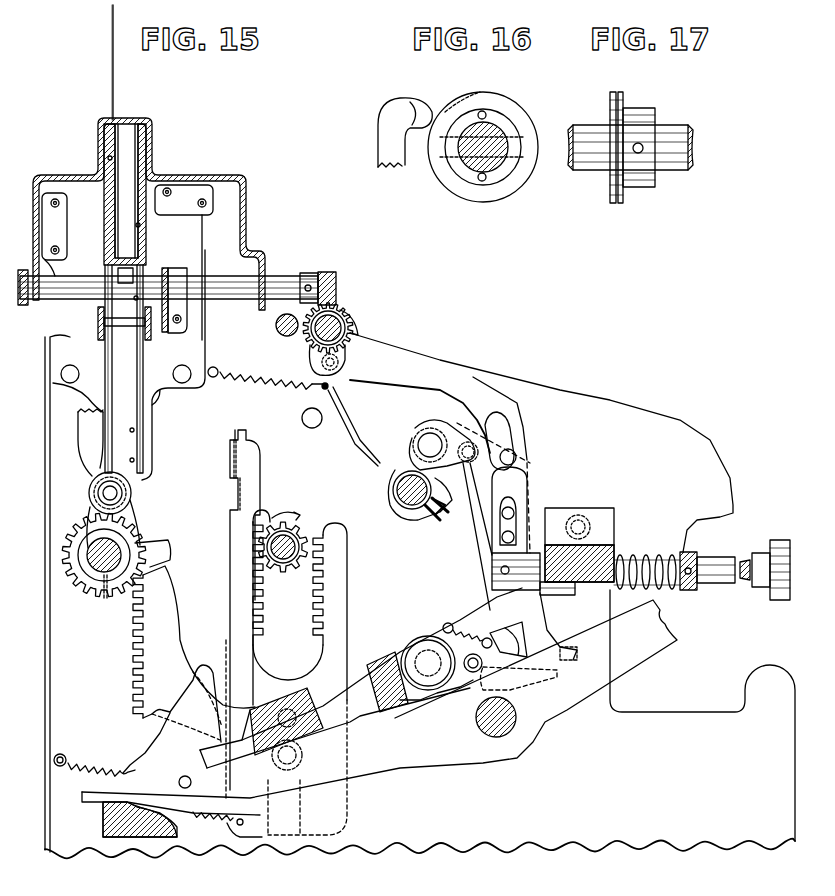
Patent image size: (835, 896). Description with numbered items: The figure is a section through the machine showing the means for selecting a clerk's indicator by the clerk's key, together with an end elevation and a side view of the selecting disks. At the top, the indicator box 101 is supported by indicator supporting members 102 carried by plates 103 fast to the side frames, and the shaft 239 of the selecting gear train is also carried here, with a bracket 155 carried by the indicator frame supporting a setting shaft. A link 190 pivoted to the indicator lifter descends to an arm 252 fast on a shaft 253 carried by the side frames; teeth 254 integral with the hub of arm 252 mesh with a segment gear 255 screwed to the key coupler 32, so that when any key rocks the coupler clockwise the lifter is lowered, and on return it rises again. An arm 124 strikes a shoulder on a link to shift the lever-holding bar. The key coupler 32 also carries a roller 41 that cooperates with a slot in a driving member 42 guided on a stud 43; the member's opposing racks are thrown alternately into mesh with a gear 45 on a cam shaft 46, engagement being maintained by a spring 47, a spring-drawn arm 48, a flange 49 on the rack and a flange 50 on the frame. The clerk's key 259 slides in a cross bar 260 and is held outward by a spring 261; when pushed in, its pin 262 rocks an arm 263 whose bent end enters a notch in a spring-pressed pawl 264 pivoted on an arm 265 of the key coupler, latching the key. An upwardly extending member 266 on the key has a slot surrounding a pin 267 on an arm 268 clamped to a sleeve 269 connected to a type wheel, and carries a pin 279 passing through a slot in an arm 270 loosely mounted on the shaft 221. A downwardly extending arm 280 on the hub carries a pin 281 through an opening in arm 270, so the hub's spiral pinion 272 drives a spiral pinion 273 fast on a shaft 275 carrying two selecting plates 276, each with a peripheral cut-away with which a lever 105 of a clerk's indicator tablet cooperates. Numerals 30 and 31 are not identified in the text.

In FIG. 15, the main lever arm 30 is at (570, 698).
In FIG. 15, the pivot stud 31 is at (492, 736).
In FIG. 15, the key coupler 32 is at (402, 655).
In FIG. 15, the roller 41 is at (282, 695).
In FIG. 15, the driving member 42 is at (348, 610).
In FIG. 15, the stud 43 is at (300, 762).
In FIG. 15, the gear 45 is at (302, 525).
In FIG. 15, the cam shaft 46 is at (284, 565).
In FIG. 15, the spring 47 is at (96, 768).
In FIG. 15, the spring-drawn arm 48 is at (352, 428).
In FIG. 15, the flange 49 is at (238, 500).
In FIG. 15, the flange 50 is at (238, 432).
In FIG. 15, the indicator box 101 is at (146, 228).
In FIG. 15, the indicator supporting members 102 is at (232, 178).
In FIG. 15, the plates 103 is at (195, 245).
In FIG. 16, the lever 105 is at (400, 112).
In FIG. 15, the arm 124 is at (166, 548).
In FIG. 15, the bracket 155 is at (165, 333).
In FIG. 15, the link 190 is at (88, 455).
In FIG. 15, the shaft 221 is at (356, 325).
In FIG. 15, the shaft 239 is at (283, 335).
In FIG. 15, the arm 252 is at (128, 514).
In FIG. 15, the shaft 253 is at (86, 590).
In FIG. 15, the teeth 254 is at (104, 612).
In FIG. 15, the segment gear 255 is at (176, 622).
In FIG. 15, the clerk's key 259 is at (720, 583).
In FIG. 15, the cross bar 260 is at (603, 548).
In FIG. 15, the spring 261 is at (630, 555).
In FIG. 15, the pin 262 is at (492, 580).
In FIG. 15, the arm 263 is at (483, 545).
In FIG. 15, the spring-pressed pawl 264 is at (518, 685).
In FIG. 15, the arm 265 is at (548, 630).
In FIG. 15, the upwardly extending member 266 is at (528, 478).
In FIG. 15, the pin 267 is at (425, 440).
In FIG. 15, the arm 268 is at (418, 520).
In FIG. 15, the sleeve 269 is at (396, 486).
In FIG. 15, the arm 270 is at (448, 374).
In FIG. 15, the spiral pinion 272 is at (348, 306).
In FIG. 15, the spiral pinion 273 is at (330, 272).
In FIG. 15, the shaft 275 is at (214, 300).
In FIG. 16, the shaft 275 is at (497, 135).
In FIG. 17, the shaft 275 is at (665, 135).
In FIG. 16, the selecting plates 276 is at (493, 103).
In FIG. 17, the selecting plates 276 is at (615, 92).
In FIG. 15, the pin 279 is at (515, 445).
In FIG. 15, the arm 280 is at (320, 362).
In FIG. 15, the pin 281 is at (338, 366).